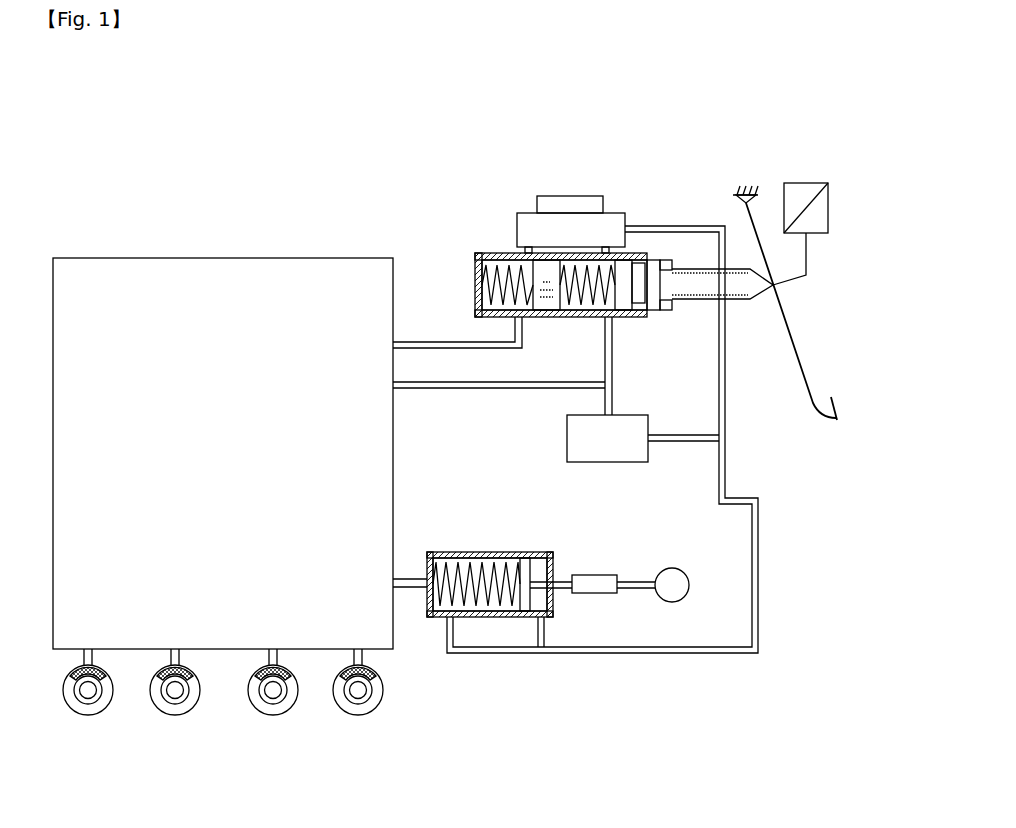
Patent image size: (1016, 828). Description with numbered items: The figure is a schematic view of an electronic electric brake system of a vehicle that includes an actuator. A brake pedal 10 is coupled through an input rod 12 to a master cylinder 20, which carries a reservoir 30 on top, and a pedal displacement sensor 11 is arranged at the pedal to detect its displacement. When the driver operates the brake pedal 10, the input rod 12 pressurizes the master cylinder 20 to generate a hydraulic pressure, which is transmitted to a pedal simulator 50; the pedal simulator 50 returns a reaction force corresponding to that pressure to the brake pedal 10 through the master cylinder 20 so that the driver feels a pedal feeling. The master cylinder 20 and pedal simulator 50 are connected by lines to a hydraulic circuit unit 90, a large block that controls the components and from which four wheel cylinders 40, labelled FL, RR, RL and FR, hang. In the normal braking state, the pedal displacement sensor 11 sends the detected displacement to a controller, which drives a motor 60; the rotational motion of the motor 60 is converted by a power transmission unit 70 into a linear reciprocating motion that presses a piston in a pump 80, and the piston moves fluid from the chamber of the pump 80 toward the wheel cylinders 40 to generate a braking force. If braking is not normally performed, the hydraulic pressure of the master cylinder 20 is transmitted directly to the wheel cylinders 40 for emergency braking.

The brake pedal 10 is at (800, 350).
The pedal displacement sensor 11 is at (803, 183).
The input rod 12 is at (705, 302).
The master cylinder 20 is at (490, 252).
The reservoir 30 is at (612, 220).
The wheel cylinders 40 is at (105, 710).
The pedal simulator 50 is at (633, 413).
The motor 60 is at (672, 568).
The power transmission unit 70 is at (592, 573).
The pump 80 is at (483, 552).
The hydraulic circuit unit 90 is at (250, 267).